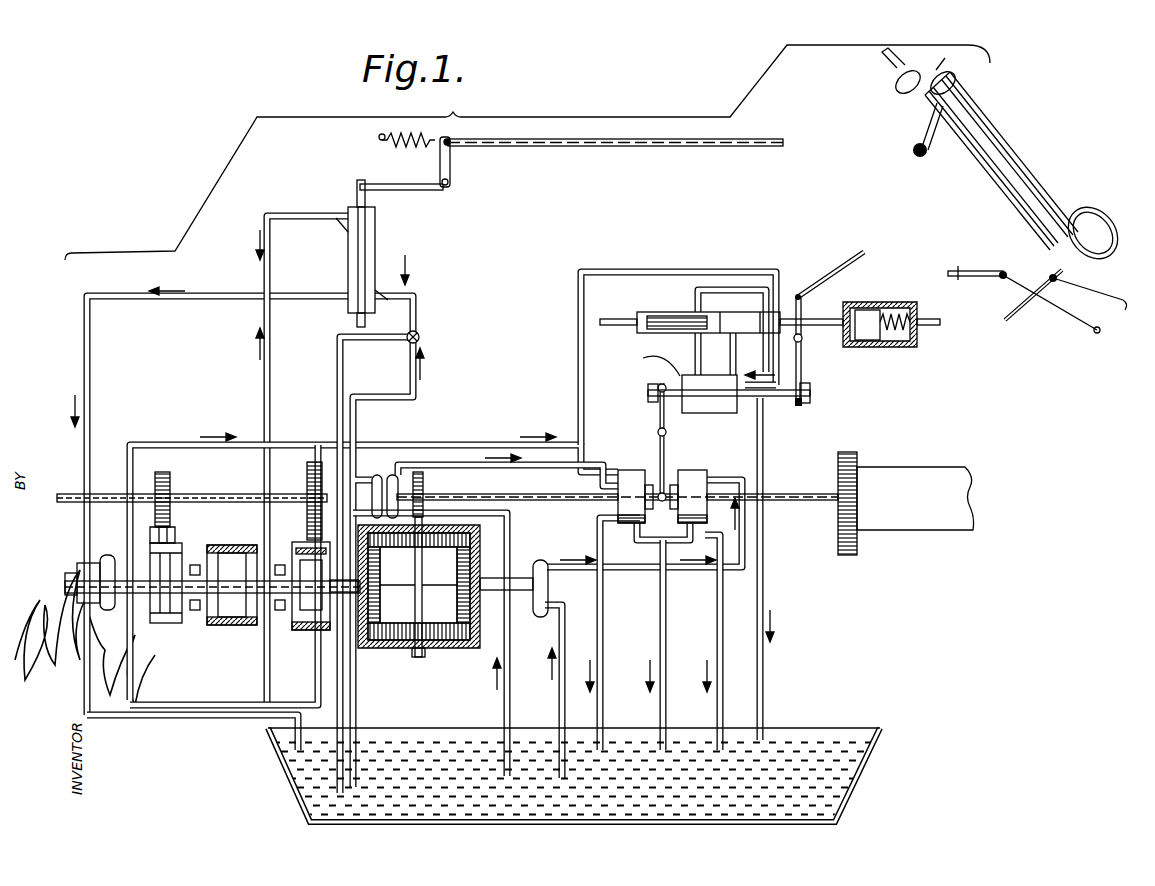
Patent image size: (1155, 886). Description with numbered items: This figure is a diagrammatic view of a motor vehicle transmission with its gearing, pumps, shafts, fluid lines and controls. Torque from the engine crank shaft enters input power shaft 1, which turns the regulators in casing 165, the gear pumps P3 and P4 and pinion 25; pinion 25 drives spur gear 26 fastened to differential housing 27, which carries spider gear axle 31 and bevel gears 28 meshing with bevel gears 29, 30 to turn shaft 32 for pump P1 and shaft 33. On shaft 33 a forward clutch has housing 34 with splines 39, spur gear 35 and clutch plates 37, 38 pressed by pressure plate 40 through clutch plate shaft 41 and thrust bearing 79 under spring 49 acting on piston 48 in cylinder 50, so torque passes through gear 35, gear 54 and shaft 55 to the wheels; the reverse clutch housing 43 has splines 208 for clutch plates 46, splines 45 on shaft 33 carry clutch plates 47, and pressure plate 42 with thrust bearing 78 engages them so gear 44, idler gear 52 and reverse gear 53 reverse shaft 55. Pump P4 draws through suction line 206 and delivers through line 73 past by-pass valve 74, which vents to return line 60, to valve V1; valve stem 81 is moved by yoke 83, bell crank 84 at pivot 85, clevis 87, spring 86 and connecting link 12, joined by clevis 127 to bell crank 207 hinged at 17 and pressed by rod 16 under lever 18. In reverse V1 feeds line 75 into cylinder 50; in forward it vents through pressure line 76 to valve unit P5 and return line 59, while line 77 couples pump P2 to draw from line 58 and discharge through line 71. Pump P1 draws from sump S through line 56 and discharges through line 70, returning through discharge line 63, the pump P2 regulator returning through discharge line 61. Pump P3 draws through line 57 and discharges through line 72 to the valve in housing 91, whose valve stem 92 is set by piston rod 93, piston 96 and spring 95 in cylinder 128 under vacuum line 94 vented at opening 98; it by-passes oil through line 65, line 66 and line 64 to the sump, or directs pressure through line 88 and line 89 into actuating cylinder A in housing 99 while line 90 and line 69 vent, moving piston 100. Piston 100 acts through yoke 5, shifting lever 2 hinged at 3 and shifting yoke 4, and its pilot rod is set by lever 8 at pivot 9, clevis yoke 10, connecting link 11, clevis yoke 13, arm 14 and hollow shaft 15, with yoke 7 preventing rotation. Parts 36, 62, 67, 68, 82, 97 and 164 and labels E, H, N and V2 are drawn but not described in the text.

The input power shaft 1 is at (445, 496).
The shifting lever 2 is at (668, 460).
The hinge 3 is at (656, 430).
The shifting yoke 4 is at (650, 538).
The yoke 5 is at (656, 388).
The yoke 7 is at (802, 403).
The lever 8 is at (802, 376).
The pivot 9 is at (802, 340).
The clevis yoke 10 is at (797, 294).
The connecting link 11 is at (862, 254).
The connecting link 12 is at (614, 146).
The clevis yoke 13 is at (1047, 279).
The arm 14 is at (1102, 236).
The hollow shaft 15 is at (1028, 180).
The shaft 16 is at (1124, 291).
The hinge 17 is at (1100, 334).
The lever 18 is at (918, 140).
The pinion 25 is at (425, 475).
The spur gear 26 is at (425, 655).
The differential housing 27 is at (480, 548).
The bevel gears 28 is at (419, 586).
The bevel gear 29 is at (418, 588).
The bevel gear 30 is at (393, 594).
The spider gear axle 31 is at (431, 587).
The shaft 32 is at (505, 580).
The shaft 33 is at (72, 572).
The clutch housing 34 is at (300, 640).
The spur gear 35 is at (318, 632).
The clutch 36 is at (311, 586).
The clutch plates 37 is at (305, 552).
The outside clutch plates 38 is at (312, 532).
The splines 39 is at (290, 628).
The pressure plate 40 is at (278, 612).
The clutch plate shaft 41 is at (195, 612).
The pressure plate 42 is at (205, 628).
The clutch housing 43 is at (150, 622).
The gear 44 is at (165, 628).
The splines 45 is at (212, 584).
The clutch plates 46 is at (156, 620).
The clutch plates 47 is at (155, 540).
The piston 48 is at (238, 627).
The spring 49 is at (222, 626).
The cylinder 50 is at (222, 546).
The idler gear 52 is at (168, 535).
The reverse gear 53 is at (167, 474).
The gear 54 is at (320, 458).
The shaft 55 is at (78, 496).
The line 56 is at (560, 716).
The line 57 is at (500, 722).
The line 58 is at (242, 705).
The return line 59 is at (170, 722).
The return line 60 is at (340, 362).
The discharge line 61 is at (598, 718).
The pipe 62 is at (665, 720).
The discharge line 63 is at (726, 700).
The line 64 is at (764, 686).
The line 65 is at (780, 380).
The return line 66 is at (763, 408).
The pipe 67 is at (700, 540).
The pipe 68 is at (520, 530).
The line 69 is at (747, 335).
The discharge line 70 is at (640, 572).
The line 71 is at (142, 440).
The line 72 is at (580, 355).
The line 73 is at (415, 425).
The by-pass valve 74 is at (420, 334).
The line 75 is at (270, 365).
The pressure line 76 is at (222, 298).
The line 77 is at (105, 555).
The thrust bearing 78 is at (194, 564).
The thrust bearing 79 is at (272, 566).
The valve stem 81 is at (356, 200).
The valve plunger 82 is at (356, 278).
The yoke 83 is at (360, 185).
The bell crank 84 is at (451, 166).
The pivot 85 is at (444, 187).
The spring 86 is at (388, 148).
The clevis 87 is at (452, 142).
The line 88 is at (712, 290).
The line 89 is at (695, 355).
The line 90 is at (730, 355).
The housing 91 is at (640, 330).
The valve stem 92 is at (628, 323).
The piston rod 93 is at (940, 324).
The vacuum suction line 94 is at (920, 318).
The spring 95 is at (912, 345).
The piston 96 is at (895, 310).
The piston 97 is at (865, 310).
The opening 98 is at (838, 340).
The housing 99 is at (742, 410).
The piston 100 is at (642, 362).
The clevis 127 is at (1005, 272).
The cylinder 128 is at (882, 347).
The reverse clutch 164 is at (694, 470).
The casing 165 is at (628, 470).
The suction line 206 is at (358, 697).
The bell crank 207 is at (1070, 312).
The splines 208 is at (180, 545).
The actuating cylinder A is at (729, 395).
The engine E is at (890, 478).
The hand brake lever H is at (998, 118).
The knob N is at (916, 166).
The sump S is at (860, 760).
The pump P1 is at (548, 608).
The pump P2 is at (78, 604).
The gear pump P3 is at (392, 474).
The gear pump P4 is at (375, 474).
The valve unit P5 is at (80, 560).
The valve V1 is at (348, 255).
The valve V2 is at (652, 318).